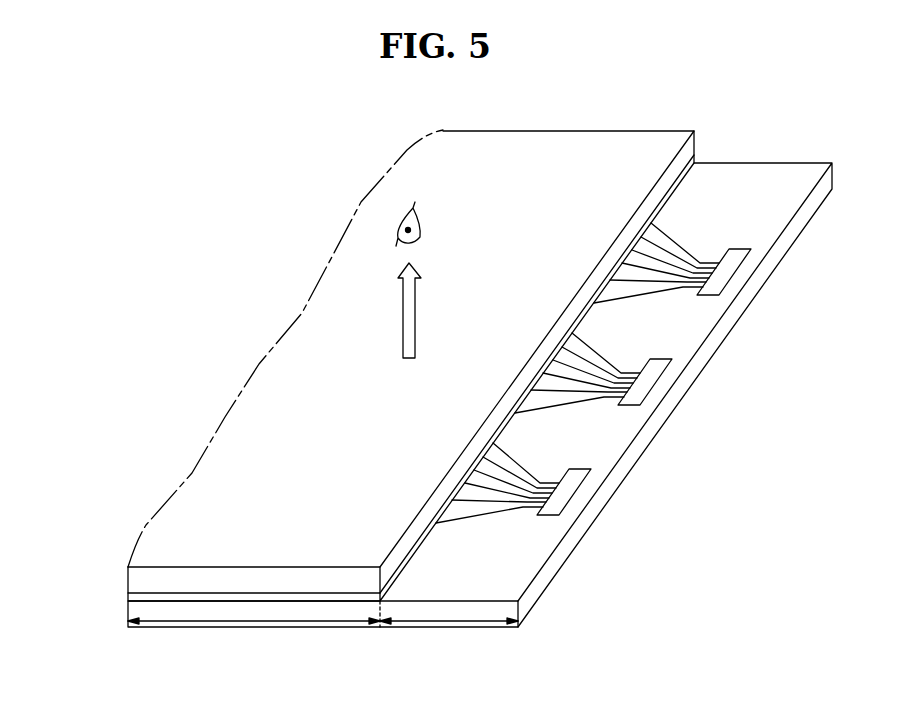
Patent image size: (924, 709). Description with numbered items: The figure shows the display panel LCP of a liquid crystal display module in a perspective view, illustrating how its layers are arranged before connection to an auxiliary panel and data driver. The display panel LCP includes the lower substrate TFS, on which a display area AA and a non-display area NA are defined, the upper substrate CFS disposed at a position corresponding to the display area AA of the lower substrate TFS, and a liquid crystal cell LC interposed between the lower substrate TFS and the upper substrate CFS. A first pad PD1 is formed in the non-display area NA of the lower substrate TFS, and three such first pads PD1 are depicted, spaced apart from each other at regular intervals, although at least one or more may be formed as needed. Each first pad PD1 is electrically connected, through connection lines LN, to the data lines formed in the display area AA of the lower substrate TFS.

The display panel LCP is at (63, 565).
The upper substrate CFS is at (128, 577).
The liquid crystal cell LC is at (128, 597).
The lower substrate TFS is at (128, 617).
The display area AA is at (254, 614).
The non-display area NA is at (449, 613).
The first pad PD1 is at (567, 493).
The connection lines LN is at (480, 515).